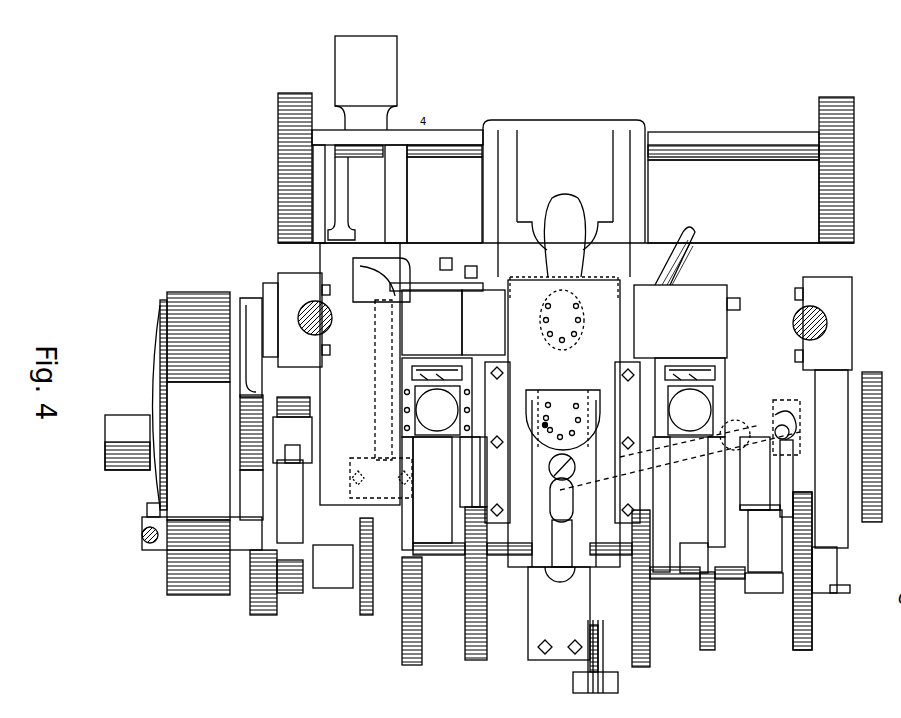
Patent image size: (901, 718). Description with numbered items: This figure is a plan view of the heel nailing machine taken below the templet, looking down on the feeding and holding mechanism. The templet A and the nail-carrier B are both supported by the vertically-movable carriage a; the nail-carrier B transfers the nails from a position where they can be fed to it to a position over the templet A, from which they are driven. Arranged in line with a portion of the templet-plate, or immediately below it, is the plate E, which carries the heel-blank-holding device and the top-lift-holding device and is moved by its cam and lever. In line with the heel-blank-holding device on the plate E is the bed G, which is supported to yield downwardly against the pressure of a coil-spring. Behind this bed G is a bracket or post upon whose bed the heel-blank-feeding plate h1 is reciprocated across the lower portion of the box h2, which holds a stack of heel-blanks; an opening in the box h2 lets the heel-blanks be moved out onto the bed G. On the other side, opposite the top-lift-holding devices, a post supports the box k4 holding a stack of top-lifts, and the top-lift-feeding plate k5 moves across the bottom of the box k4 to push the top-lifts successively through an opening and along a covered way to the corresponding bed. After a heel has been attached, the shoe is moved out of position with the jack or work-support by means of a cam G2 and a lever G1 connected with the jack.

The bed G is at (453, 363).
The plate E is at (687, 361).
The templet A is at (564, 423).
The carriage a is at (562, 442).
The nail-carrier B is at (563, 456).
The heel-blank-feeding plate h1 is at (427, 493).
The box h2 is at (470, 472).
The box k4 is at (680, 440).
The top-lift-feeding plate k5 is at (689, 505).
The lever G1 is at (766, 515).
The cam G2 is at (812, 600).